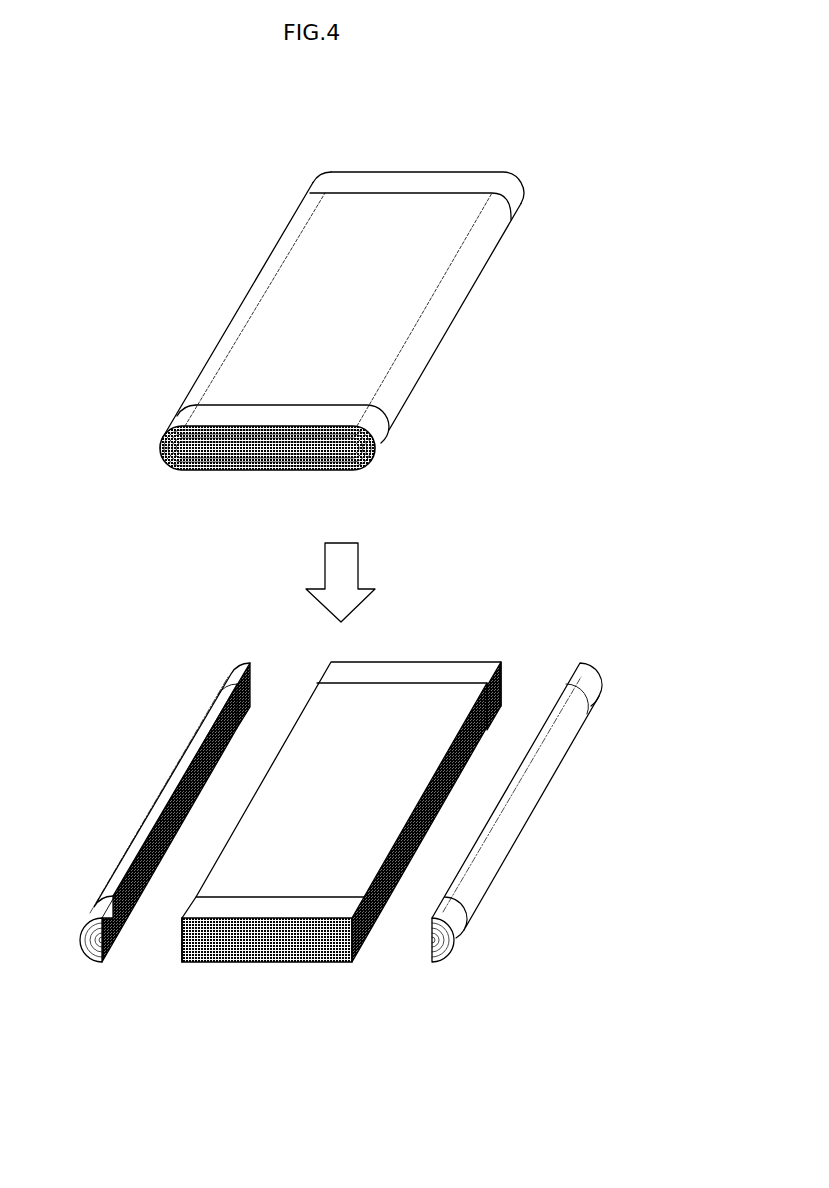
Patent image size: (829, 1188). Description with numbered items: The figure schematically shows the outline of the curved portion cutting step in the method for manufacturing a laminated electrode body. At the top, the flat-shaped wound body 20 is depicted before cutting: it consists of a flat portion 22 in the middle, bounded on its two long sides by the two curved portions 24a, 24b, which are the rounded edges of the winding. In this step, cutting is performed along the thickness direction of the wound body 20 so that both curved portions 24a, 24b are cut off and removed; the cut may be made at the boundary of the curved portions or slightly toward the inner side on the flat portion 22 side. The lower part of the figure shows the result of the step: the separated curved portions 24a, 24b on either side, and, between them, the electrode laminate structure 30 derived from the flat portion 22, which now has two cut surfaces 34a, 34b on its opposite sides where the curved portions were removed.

The wound body 20 is at (361, 350).
The flat portion 22 is at (243, 462).
The curved portion 24a is at (160, 446).
The curved portion 24b is at (378, 438).
The electrode laminate structure 30 is at (298, 842).
The cut surface 34a is at (182, 940).
The cut surface 34b is at (380, 915).